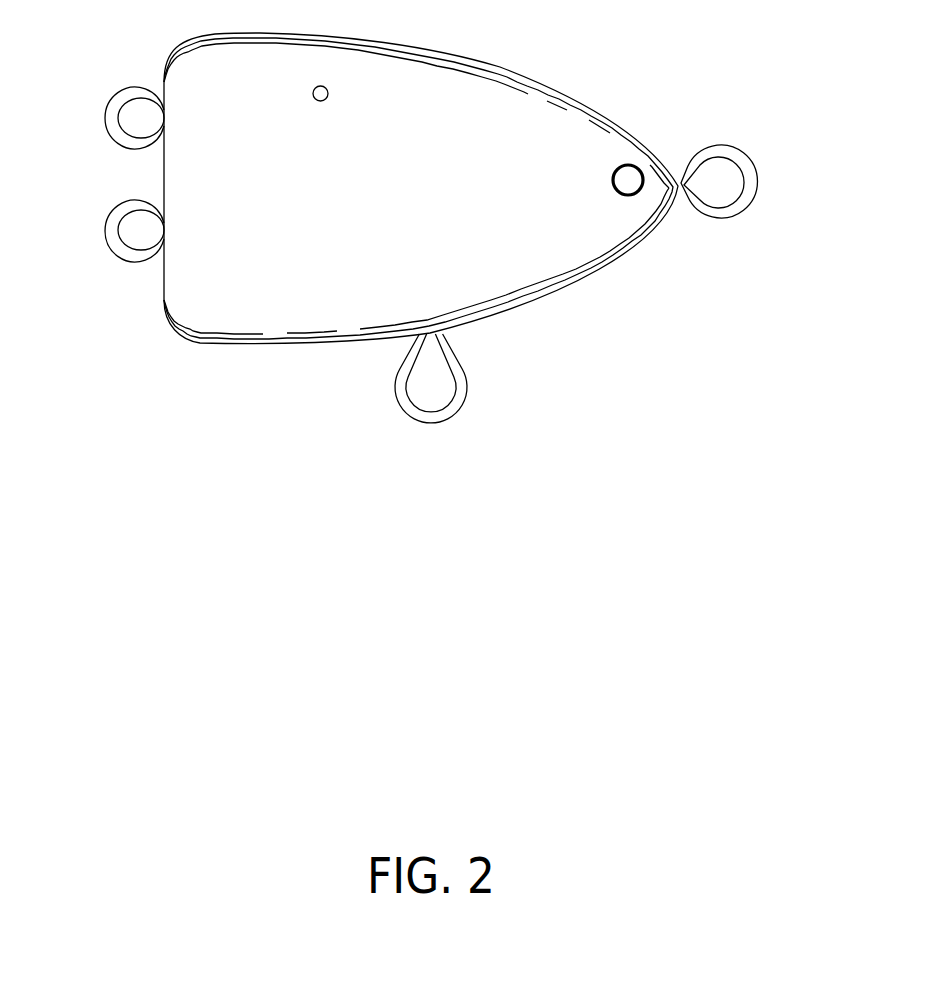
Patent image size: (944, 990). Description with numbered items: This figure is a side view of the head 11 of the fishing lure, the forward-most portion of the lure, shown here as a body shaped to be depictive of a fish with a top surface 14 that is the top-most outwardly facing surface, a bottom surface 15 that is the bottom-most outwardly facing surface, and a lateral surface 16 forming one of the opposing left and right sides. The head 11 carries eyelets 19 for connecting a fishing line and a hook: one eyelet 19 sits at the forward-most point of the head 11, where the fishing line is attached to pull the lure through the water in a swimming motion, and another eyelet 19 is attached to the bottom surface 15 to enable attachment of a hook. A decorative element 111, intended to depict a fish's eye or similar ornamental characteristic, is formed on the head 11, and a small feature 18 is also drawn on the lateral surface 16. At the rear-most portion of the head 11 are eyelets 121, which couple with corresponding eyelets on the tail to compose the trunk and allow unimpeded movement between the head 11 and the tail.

The head 11 is at (797, 302).
The top surface 14 is at (465, 72).
The bottom surface 15 is at (288, 338).
The lateral surface 16 is at (337, 221).
The hole 18 is at (325, 99).
The eyelet 19 is at (740, 156).
The decorative element 111 is at (621, 185).
The eyelet 121 is at (137, 90).